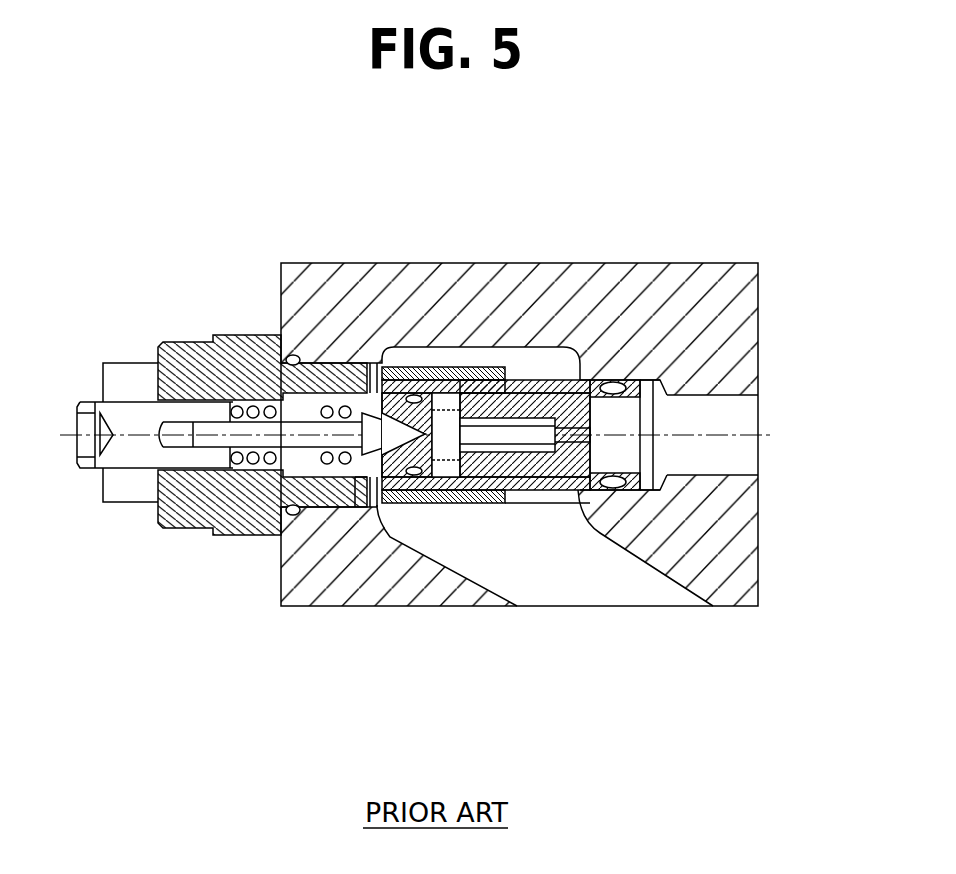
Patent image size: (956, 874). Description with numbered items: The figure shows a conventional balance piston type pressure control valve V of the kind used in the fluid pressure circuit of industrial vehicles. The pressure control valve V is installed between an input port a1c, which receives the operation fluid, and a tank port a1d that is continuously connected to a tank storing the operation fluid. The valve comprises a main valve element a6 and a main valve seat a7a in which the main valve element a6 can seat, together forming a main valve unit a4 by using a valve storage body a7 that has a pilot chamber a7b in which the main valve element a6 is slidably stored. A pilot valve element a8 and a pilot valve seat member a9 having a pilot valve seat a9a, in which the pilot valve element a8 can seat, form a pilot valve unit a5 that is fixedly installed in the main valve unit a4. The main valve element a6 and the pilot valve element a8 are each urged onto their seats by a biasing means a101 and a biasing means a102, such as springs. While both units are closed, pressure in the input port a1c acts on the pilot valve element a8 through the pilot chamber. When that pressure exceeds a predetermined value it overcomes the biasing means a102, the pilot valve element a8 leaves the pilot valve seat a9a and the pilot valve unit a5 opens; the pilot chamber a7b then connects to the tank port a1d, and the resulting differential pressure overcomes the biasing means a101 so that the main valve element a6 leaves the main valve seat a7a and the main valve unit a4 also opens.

The input port a1c is at (708, 409).
The tank port a1d is at (606, 574).
The biasing means a102 is at (250, 467).
The pressure control valve V is at (214, 544).
The pilot valve unit a5 is at (372, 394).
The pilot valve seat member a9 is at (380, 362).
The pilot valve seat a9a is at (348, 507).
The pilot valve element a8 is at (418, 366).
The biasing means a101 is at (490, 383).
The main valve element a6 is at (530, 400).
The valve storage body a7 is at (413, 503).
The pilot chamber a7b is at (433, 503).
The main valve seat a7a is at (535, 492).
The main valve unit a4 is at (513, 494).